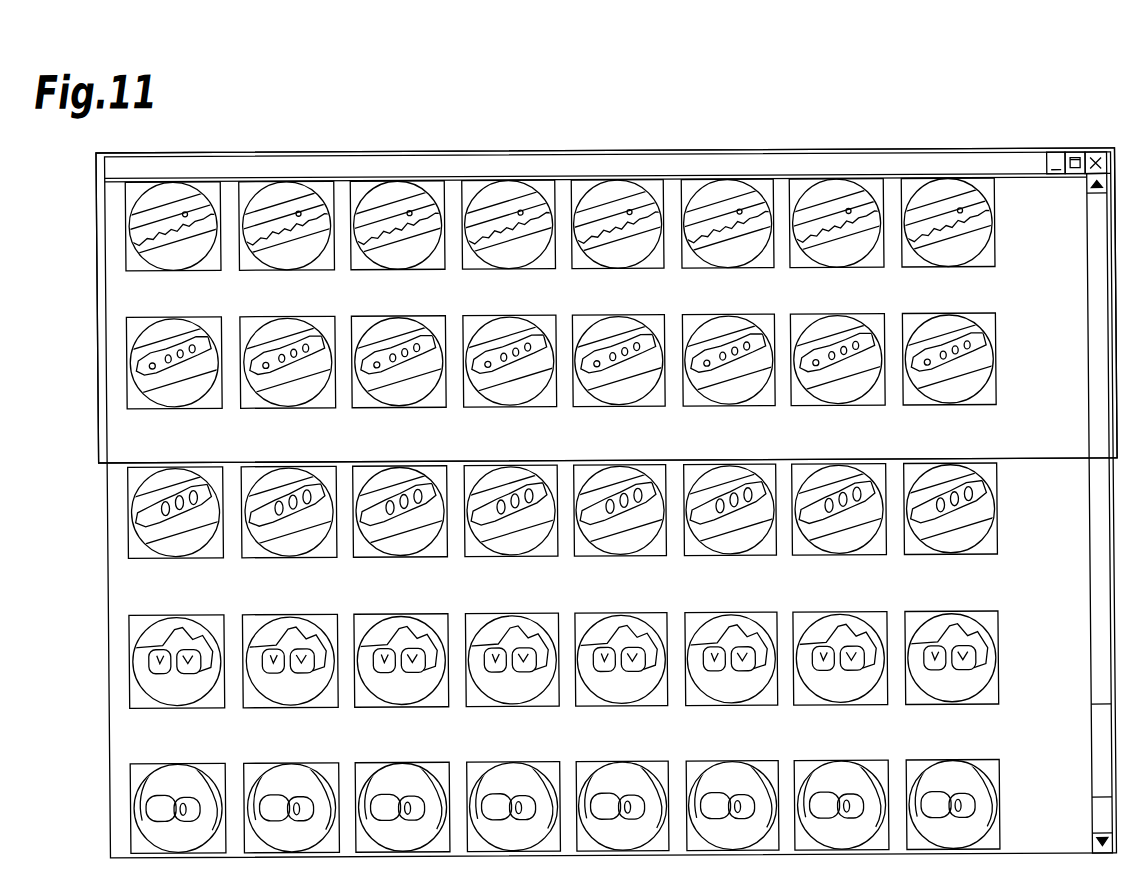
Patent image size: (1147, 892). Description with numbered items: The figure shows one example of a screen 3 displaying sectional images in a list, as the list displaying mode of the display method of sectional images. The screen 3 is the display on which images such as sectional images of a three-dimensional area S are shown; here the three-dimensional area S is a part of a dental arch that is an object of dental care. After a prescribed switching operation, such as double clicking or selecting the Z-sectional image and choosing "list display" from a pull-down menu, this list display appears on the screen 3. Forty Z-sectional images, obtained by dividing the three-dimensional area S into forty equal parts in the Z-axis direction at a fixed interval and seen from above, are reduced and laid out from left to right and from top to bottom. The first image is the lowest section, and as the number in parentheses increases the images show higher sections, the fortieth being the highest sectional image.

The screen 3 is at (1115, 256).
The three-dimensional area S is at (147, 239).